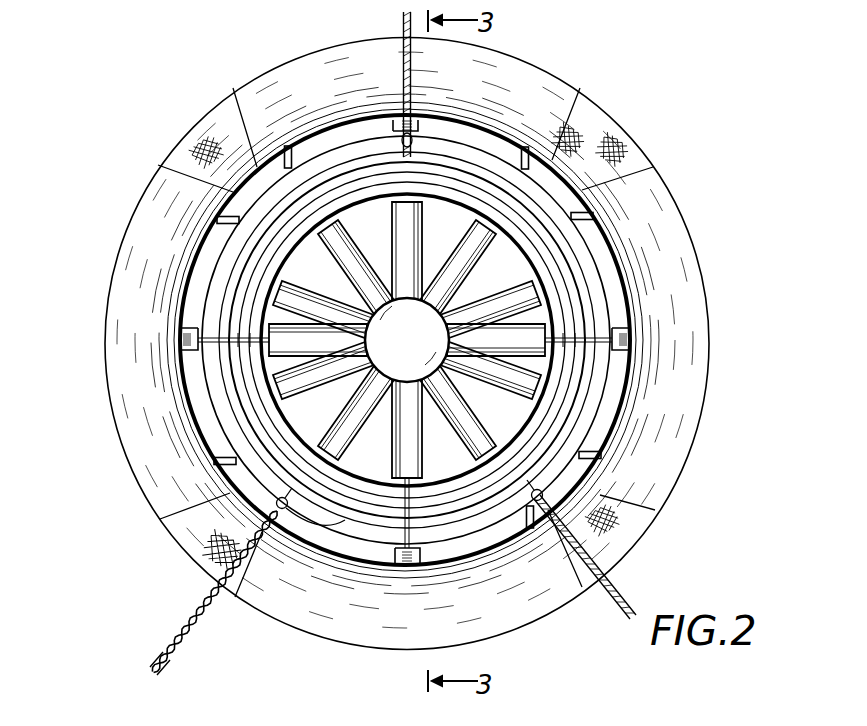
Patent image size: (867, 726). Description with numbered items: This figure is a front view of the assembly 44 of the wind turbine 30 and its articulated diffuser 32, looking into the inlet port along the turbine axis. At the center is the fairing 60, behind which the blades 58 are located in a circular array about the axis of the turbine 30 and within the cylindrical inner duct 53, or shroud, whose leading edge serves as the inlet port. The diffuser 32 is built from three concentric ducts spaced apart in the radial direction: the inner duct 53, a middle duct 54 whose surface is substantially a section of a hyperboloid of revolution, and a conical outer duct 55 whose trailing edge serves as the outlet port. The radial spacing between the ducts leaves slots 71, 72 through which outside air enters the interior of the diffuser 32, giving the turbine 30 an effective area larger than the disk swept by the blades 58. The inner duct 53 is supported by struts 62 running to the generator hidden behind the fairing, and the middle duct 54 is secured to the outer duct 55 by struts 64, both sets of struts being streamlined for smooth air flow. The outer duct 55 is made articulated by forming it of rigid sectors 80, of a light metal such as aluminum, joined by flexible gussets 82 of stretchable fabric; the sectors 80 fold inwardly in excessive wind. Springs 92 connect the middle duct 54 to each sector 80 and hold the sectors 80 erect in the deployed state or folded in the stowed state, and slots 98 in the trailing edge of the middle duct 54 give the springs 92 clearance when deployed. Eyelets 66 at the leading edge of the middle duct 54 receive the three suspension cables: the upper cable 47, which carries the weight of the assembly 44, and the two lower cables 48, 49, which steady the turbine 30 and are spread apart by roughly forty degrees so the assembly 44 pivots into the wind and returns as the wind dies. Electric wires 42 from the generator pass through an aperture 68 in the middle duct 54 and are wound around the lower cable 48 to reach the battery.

The wind turbine 30 is at (345, 410).
The articulated diffuser 32 is at (538, 56).
The electric wires 42 is at (183, 645).
The assembly 44 is at (728, 130).
The upper cable 47 is at (402, 22).
The lower cable 48 is at (162, 652).
The lower cable 49 is at (625, 597).
The inner duct 53 is at (400, 508).
The middle duct 54 is at (332, 547).
The outer duct 55 is at (135, 488).
The blades 58 is at (433, 206).
The fairing 60 is at (460, 303).
The struts 62 is at (287, 342).
The struts 64 is at (247, 353).
The eyelets 66 is at (288, 506).
The aperture 68 is at (340, 522).
The slot 71 is at (478, 200).
The slot 72 is at (515, 133).
The rigid sectors 80 is at (275, 70).
The flexible gussets 82 is at (188, 137).
The springs 92 is at (183, 352).
The slots 98 is at (416, 116).